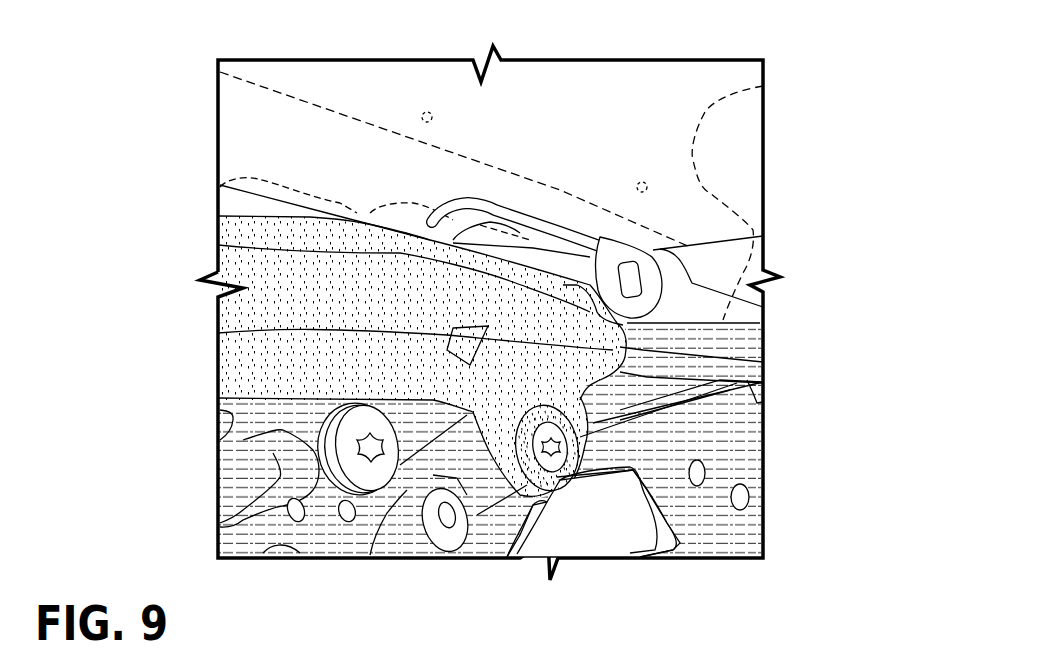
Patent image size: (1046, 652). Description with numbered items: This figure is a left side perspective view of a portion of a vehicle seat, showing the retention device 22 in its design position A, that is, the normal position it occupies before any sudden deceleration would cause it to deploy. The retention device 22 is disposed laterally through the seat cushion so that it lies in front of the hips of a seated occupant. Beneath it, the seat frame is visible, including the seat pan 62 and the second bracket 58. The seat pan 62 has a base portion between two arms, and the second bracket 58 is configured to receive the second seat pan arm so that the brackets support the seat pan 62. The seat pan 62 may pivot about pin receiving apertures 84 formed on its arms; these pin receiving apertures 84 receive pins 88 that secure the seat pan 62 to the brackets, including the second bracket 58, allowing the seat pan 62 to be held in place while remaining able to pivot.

The retention device 22 is at (538, 222).
The design position A is at (585, 219).
The seat pan 62 is at (270, 358).
The second bracket 58 is at (710, 442).
The pin receiving apertures 84 is at (540, 480).
The pins 88 is at (560, 433).